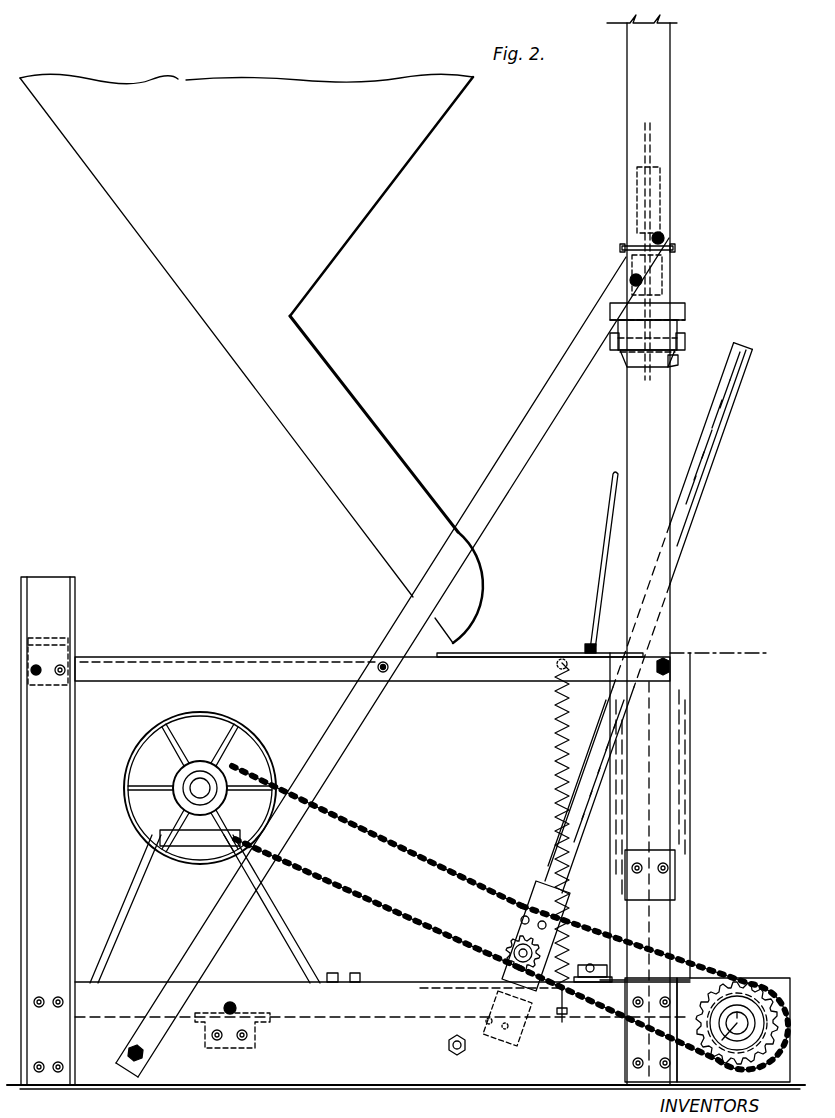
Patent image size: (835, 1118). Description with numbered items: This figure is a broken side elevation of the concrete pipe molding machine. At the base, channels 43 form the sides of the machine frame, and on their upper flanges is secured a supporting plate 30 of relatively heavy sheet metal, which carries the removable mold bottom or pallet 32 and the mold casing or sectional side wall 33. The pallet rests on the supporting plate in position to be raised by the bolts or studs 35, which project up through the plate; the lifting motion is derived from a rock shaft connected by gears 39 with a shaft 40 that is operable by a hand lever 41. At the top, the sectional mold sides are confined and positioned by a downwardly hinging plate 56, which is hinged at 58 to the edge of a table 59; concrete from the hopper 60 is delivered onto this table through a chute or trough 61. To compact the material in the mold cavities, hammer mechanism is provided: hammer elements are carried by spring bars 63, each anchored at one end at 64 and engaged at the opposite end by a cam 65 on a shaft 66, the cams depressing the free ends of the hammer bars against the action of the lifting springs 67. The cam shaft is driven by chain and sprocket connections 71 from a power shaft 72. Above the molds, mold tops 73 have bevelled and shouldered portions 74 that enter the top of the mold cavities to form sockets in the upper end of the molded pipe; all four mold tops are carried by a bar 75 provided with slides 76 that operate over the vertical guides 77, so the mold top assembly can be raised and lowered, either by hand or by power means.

The supporting plate 30 is at (615, 990).
The removable mold bottom or pallet 32 is at (712, 968).
The mold casing or sectional side wall 33 is at (692, 814).
The bolts or studs 35 is at (596, 965).
The gears 39 is at (508, 940).
The shaft 40 is at (505, 953).
The hand lever 41 is at (700, 503).
The channels 43 is at (320, 1086).
The downwardly hinging plate 56 is at (603, 530).
The hinge 58 is at (588, 650).
The table 59 is at (503, 655).
The hopper 60 is at (251, 358).
The chute or trough 61 is at (417, 490).
The spring bars 63 is at (400, 1020).
The anchorage 64 is at (272, 1027).
The cam 65 is at (768, 992).
The shaft 66 is at (713, 1054).
The lifting springs 67 is at (554, 780).
The chain and sprocket connections 71 is at (402, 846).
The power shaft 72 is at (206, 770).
The mold tops 73 is at (688, 338).
The bevelled and shouldered portions 74 is at (677, 362).
The bar 75 is at (676, 248).
The slides 76 is at (660, 176).
The vertical guides 77 is at (627, 409).